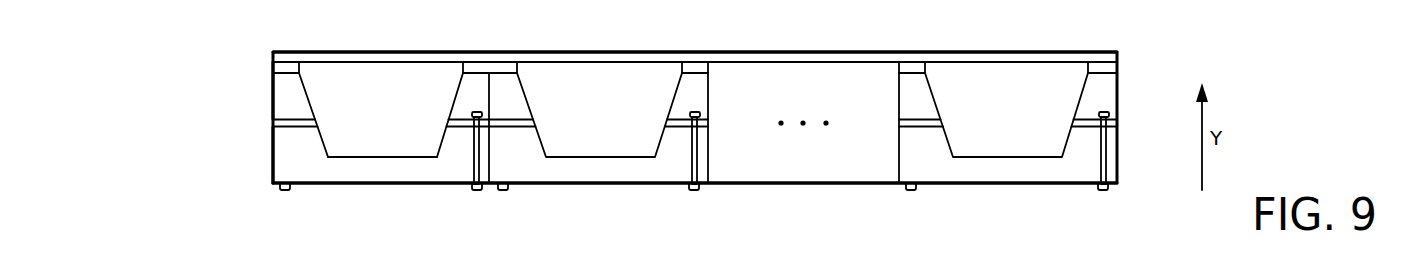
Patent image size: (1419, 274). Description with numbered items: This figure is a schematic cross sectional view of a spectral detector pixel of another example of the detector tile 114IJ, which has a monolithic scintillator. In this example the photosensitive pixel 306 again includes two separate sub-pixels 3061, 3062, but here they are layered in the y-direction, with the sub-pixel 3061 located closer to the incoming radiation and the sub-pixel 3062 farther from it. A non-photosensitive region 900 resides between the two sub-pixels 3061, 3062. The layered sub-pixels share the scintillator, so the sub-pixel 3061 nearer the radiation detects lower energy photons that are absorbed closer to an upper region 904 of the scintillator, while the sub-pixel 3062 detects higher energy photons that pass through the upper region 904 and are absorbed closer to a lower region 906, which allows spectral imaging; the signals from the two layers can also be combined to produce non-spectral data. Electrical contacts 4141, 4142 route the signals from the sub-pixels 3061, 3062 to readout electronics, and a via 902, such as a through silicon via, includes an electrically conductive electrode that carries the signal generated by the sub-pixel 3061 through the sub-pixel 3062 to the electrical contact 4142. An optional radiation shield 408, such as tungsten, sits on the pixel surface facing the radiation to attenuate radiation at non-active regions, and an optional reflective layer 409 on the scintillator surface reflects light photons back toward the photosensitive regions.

The photosensitive pixel 306 is at (368, 53).
The sub-pixel 3061 is at (273, 91).
The sub-pixel 3062 is at (273, 162).
The non-photosensitive region 900 is at (273, 122).
The upper region of the scintillator 904 is at (693, 109).
The lower region of the scintillator 906 is at (382, 142).
The radiation shield 408 is at (503, 70).
The reflective layer 409 is at (578, 58).
The via 902 is at (474, 174).
The electrical contact 4141 is at (285, 191).
The electrical contact 4142 is at (480, 191).
The detector tile 114IJ is at (1117, 70).